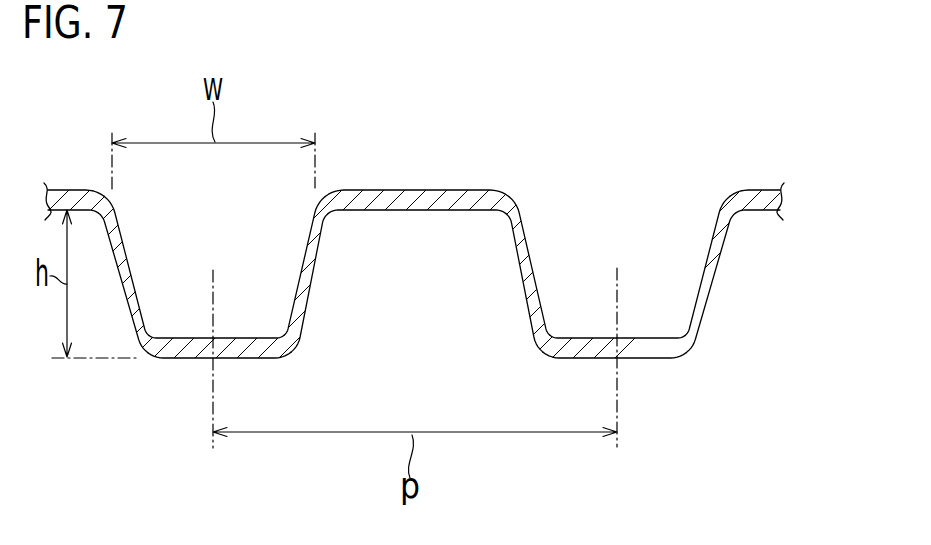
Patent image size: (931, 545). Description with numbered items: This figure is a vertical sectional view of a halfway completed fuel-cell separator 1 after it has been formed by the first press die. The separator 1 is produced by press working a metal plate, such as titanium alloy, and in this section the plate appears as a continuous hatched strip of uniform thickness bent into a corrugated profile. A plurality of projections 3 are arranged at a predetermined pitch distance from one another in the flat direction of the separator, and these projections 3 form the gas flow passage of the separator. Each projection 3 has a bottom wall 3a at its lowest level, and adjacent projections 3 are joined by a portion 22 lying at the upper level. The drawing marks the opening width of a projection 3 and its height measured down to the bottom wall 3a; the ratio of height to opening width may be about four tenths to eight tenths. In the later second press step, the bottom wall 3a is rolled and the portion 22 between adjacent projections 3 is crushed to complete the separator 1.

The fuel-cell separator 1 is at (645, 155).
The portion between the adjacent projections 22 is at (68, 189).
The projection 3 is at (156, 358).
The bottom wall of the projection 3a is at (192, 350).